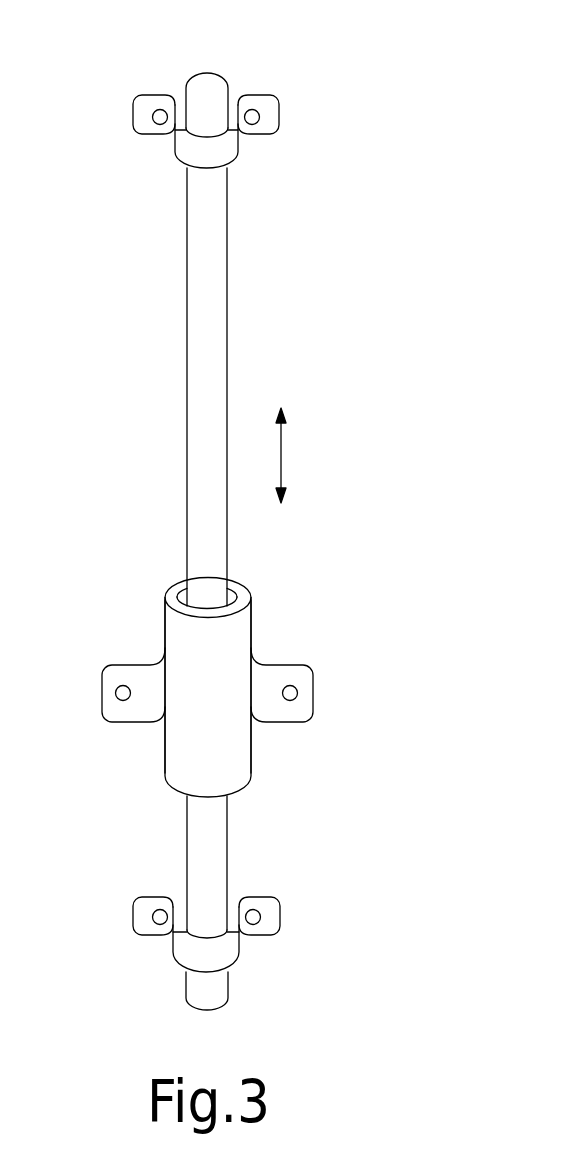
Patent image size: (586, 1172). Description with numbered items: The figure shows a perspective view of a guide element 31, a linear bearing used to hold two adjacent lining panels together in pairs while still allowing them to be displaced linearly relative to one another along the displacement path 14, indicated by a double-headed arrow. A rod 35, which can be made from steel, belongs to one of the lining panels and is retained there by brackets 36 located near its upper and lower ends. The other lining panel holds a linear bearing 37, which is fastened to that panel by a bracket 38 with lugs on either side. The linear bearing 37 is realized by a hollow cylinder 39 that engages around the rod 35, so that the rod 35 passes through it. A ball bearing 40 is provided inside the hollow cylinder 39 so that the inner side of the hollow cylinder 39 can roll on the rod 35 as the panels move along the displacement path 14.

The guide element 31 is at (381, 198).
The rod 35 is at (187, 252).
The bracket 36 is at (258, 94).
The linear bearing 37 is at (252, 610).
The hollow cylinder 39 is at (208, 686).
The bracket 38 is at (313, 692).
The ball bearing 40 is at (187, 585).
The displacement path 14 is at (282, 448).